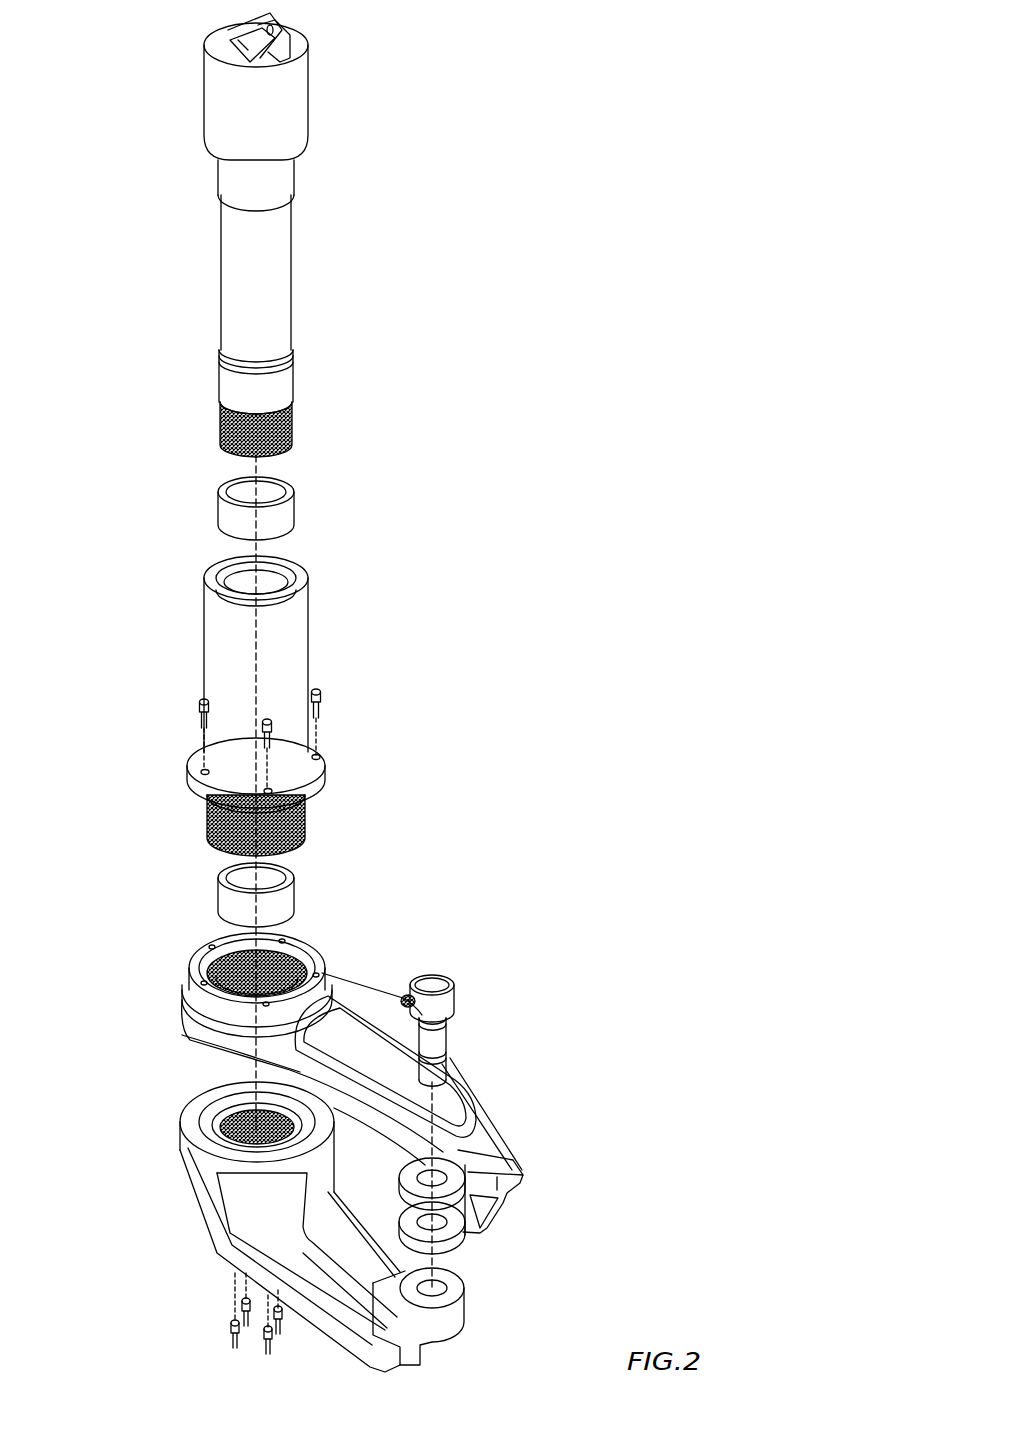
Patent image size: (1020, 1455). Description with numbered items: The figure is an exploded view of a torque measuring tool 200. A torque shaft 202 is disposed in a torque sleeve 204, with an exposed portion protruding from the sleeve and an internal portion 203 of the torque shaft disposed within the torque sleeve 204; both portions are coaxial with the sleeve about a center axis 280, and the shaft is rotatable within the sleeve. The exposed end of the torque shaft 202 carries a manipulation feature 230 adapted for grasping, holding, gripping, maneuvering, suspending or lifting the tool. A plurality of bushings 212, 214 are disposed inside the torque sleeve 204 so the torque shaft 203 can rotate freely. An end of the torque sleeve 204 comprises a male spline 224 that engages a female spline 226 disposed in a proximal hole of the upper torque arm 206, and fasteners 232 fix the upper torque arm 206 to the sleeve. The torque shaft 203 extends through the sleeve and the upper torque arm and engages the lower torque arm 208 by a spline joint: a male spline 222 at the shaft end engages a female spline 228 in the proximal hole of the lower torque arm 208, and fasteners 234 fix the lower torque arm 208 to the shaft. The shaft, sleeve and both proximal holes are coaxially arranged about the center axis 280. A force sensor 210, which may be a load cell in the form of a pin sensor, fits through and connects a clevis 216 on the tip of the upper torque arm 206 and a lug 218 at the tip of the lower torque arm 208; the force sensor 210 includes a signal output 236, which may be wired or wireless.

The torque measuring tool 200 is at (703, 51).
The torque shaft 202 is at (297, 108).
The internal portion of the torque shaft 203 is at (275, 262).
The torque sleeve 204 is at (283, 658).
The upper torque arm 206 is at (451, 1114).
The lower torque arm 208 is at (250, 1205).
The force sensor 210 is at (436, 985).
The bushing 212 is at (294, 506).
The bushing 214 is at (296, 896).
The clevis 216 is at (468, 1160).
The lug 218 is at (455, 1285).
The spline 222 is at (293, 414).
The spline 224 is at (206, 808).
The spline 226 is at (214, 966).
The spline 228 is at (220, 1123).
The manipulation feature 230 is at (226, 32).
The fasteners 232 is at (201, 711).
The fasteners 234 is at (233, 1331).
The signal output 236 is at (405, 1000).
The center axis 280 is at (258, 568).